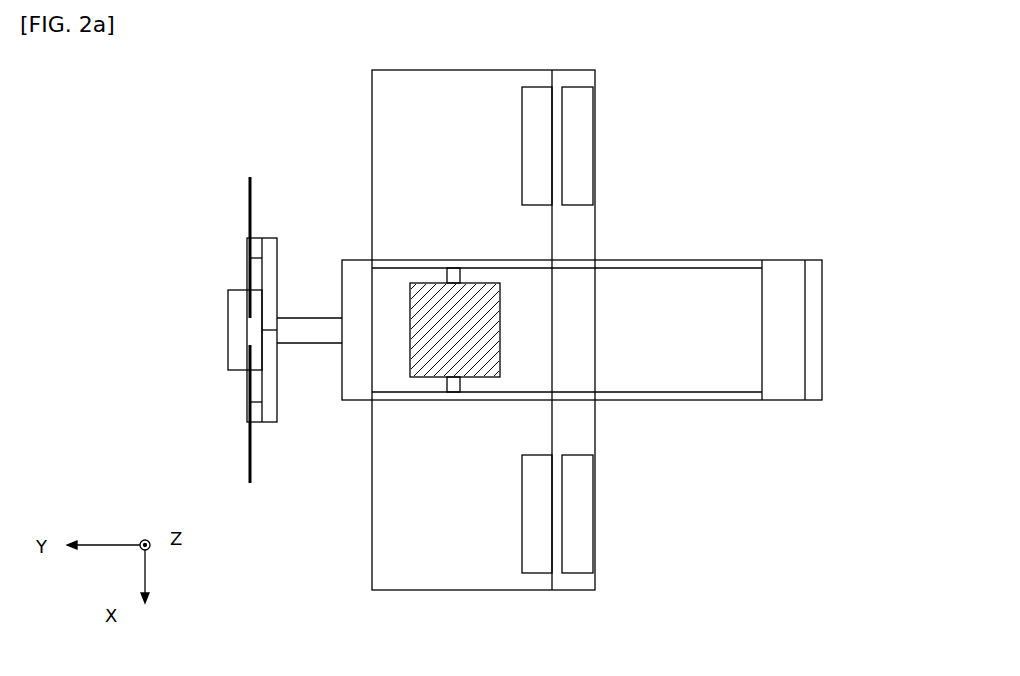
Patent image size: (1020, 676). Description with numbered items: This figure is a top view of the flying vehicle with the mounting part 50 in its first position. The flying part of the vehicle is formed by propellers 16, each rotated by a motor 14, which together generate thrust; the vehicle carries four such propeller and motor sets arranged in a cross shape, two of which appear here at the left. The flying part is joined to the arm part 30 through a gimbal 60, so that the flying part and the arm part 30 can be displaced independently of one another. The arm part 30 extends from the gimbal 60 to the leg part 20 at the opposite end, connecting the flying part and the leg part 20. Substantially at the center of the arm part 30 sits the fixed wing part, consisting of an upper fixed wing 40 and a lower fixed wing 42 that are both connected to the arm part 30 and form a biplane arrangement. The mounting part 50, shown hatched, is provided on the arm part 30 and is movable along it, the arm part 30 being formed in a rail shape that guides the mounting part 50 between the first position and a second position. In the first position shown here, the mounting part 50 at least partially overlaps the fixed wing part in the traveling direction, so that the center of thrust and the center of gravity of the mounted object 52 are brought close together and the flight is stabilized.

The motor 14 is at (246, 246).
The propeller 16 is at (248, 187).
The leg part 20 is at (790, 400).
The arm part 30 is at (640, 268).
The upper fixed wing 40 is at (533, 528).
The lower fixed wing 42 is at (578, 493).
The mounting part 50 is at (445, 321).
The mounted object 52 is at (410, 357).
The gimbal 60 is at (227, 331).